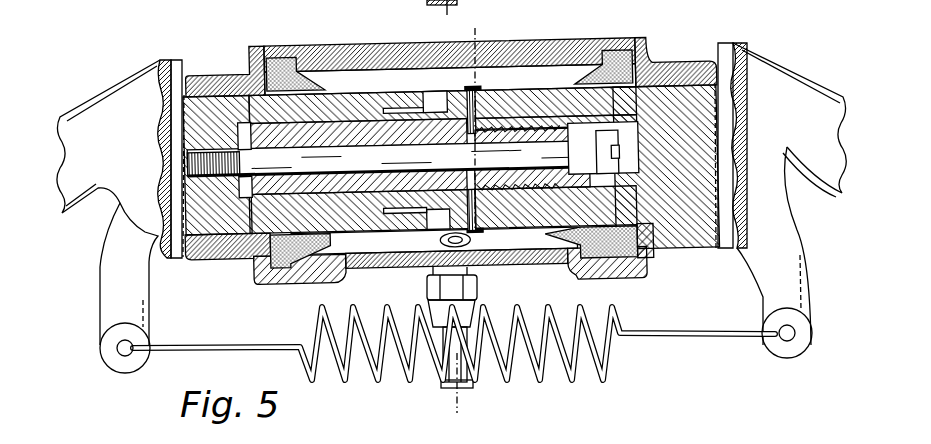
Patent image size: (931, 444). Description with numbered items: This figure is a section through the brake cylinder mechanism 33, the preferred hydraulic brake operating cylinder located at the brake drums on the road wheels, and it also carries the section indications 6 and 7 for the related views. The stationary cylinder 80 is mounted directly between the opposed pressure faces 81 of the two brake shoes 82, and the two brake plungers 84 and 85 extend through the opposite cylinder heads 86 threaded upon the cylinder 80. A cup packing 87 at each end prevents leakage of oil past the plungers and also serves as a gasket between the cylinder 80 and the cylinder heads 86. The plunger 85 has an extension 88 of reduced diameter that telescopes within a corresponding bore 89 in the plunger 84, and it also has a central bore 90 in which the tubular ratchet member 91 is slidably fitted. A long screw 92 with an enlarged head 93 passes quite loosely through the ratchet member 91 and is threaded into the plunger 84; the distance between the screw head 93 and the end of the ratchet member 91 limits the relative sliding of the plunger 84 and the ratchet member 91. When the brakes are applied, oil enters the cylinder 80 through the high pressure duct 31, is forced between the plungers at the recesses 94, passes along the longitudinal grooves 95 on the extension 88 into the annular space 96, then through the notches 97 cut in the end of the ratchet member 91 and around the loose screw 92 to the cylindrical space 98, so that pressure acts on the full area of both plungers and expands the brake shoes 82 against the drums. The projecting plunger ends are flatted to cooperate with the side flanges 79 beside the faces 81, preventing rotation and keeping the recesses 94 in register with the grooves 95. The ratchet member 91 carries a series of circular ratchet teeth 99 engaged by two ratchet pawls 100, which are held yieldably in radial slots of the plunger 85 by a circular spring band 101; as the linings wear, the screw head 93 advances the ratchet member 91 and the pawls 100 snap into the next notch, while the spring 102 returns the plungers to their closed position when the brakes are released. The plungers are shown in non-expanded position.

The section line 6- 6 is at (487, 40).
The section line 7- 7 is at (447, 15).
The high pressure duct 31 is at (470, 382).
The brake cylinder mechanism 33 is at (643, 17).
The side flanges 79 is at (174, 60).
The cylinder 80 is at (362, 70).
The pressure faces 81 is at (183, 70).
The brake shoes 82 is at (70, 120).
The brake plunger 84 is at (196, 125).
The brake plunger 85 is at (707, 134).
The cylinder heads 86 is at (215, 85).
The cup packing 87 is at (262, 278).
The extension 88 is at (330, 126).
The bore 89 is at (238, 117).
The central bore 90 is at (588, 137).
The tubular ratchet member 91 is at (531, 195).
The long screw 92 is at (358, 212).
The enlarged head 93 is at (603, 133).
The recesses 94 is at (433, 98).
The longitudinal grooves 95 is at (397, 113).
The annular space 96 is at (247, 214).
The notches 97 is at (240, 143).
The cylindrical space 98 is at (635, 173).
The ratchet teeth 99 is at (542, 128).
The ratchet pawls 100 is at (488, 125).
The circular spring band 101 is at (477, 103).
The spring 102 is at (578, 347).